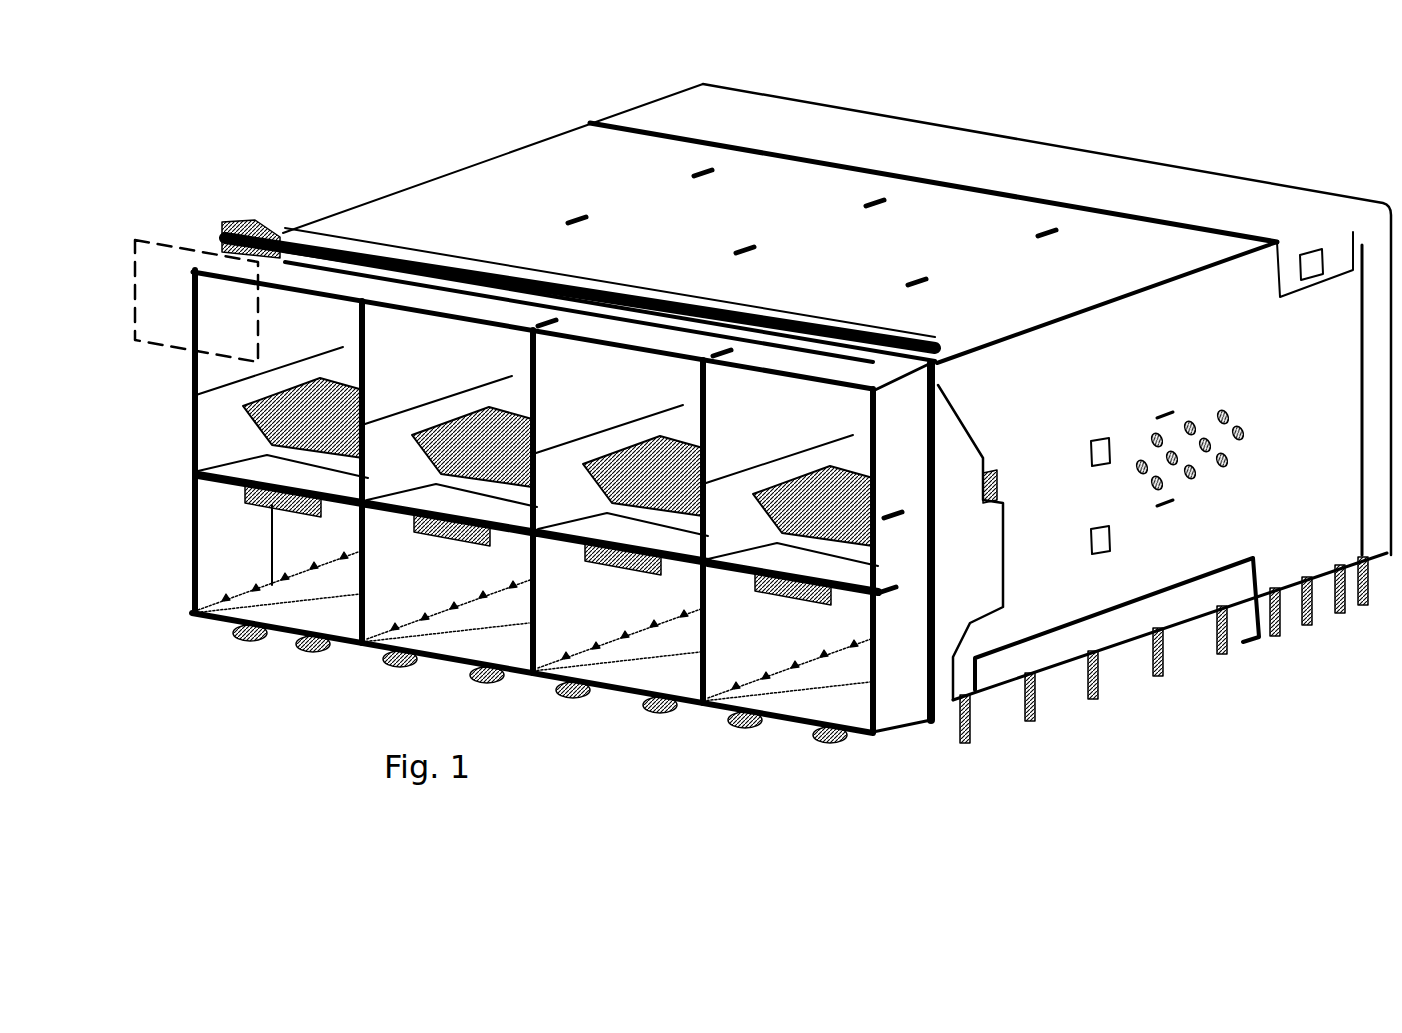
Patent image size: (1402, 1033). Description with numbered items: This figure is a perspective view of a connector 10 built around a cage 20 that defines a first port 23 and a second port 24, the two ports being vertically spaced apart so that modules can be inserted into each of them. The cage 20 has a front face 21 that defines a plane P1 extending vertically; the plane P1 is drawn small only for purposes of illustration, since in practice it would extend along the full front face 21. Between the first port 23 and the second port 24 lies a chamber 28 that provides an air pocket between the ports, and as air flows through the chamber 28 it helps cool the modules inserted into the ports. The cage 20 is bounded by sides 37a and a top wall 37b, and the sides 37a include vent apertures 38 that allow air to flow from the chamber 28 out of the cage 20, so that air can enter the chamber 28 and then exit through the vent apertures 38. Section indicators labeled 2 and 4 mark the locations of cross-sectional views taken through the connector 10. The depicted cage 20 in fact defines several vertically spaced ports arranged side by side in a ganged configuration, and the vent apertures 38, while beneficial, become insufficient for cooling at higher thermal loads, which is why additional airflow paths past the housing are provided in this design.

The connector 10 is at (1072, 130).
The cage 20 is at (393, 197).
The front face 21 is at (346, 650).
The first port 23 is at (765, 416).
The second port 24 is at (772, 694).
The chamber 28 is at (732, 529).
The sides 37a is at (1062, 571).
The top wall 37b is at (804, 208).
The vent apertures 38 is at (1240, 479).
The plane P1 is at (197, 240).
The section line 2- 2 is at (877, 380).
The section line 4- 4 is at (1150, 257).